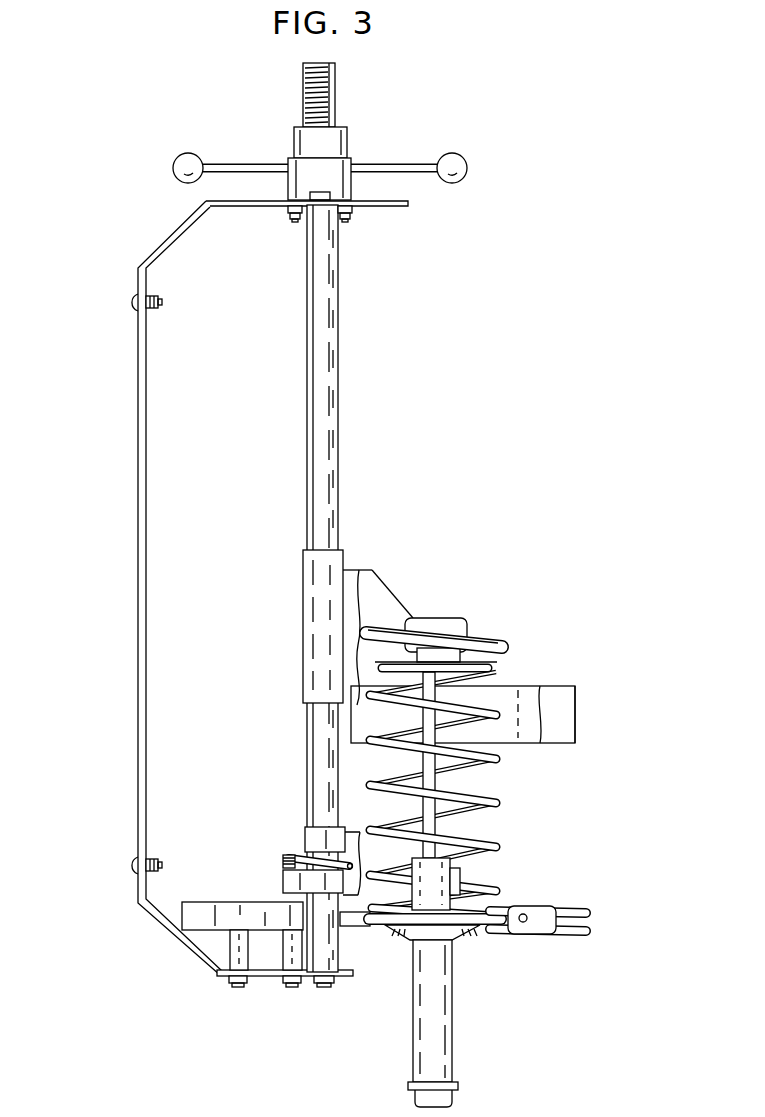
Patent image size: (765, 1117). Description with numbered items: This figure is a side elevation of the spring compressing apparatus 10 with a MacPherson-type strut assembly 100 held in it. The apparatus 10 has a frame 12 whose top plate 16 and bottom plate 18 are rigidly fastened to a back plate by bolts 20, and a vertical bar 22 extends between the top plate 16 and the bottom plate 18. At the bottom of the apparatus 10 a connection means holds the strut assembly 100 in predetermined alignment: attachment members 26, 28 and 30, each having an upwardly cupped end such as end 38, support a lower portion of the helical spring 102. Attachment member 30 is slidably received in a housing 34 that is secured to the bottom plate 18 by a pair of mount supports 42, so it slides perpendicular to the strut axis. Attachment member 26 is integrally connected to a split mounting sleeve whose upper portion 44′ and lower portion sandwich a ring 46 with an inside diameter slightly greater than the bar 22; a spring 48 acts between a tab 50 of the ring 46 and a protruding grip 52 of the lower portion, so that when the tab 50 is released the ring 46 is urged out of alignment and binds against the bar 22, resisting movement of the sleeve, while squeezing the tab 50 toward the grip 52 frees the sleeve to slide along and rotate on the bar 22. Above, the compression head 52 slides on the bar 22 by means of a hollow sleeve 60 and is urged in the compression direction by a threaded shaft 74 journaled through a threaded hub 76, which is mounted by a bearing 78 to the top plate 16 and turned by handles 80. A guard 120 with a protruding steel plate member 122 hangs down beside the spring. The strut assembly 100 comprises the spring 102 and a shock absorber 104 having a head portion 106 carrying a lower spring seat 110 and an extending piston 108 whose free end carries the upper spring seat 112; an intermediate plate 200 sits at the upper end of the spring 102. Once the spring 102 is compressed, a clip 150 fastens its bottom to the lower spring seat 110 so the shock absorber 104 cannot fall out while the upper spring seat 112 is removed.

The apparatus 10 is at (408, 457).
The frame 12 is at (128, 537).
The top plate 16 is at (257, 206).
The bottom plate 18 is at (267, 977).
The bolts 20 is at (163, 301).
The vertical bar 22 is at (306, 360).
The attachment member 26 is at (360, 572).
The attachment member 28 is at (392, 588).
The attachment member 30 is at (353, 924).
The housing 34 is at (210, 903).
The upwardly cupped end 38 is at (460, 904).
The mount supports 42 is at (226, 952).
The upper portion of sleeve 44′ is at (305, 818).
The ring 46 is at (348, 866).
The spring 48 is at (284, 864).
The tab 50 is at (298, 858).
The compression head 52 is at (292, 545).
The hollow sleeve 60 is at (303, 614).
The threaded shaft 74 is at (337, 88).
The threaded hub 76 is at (352, 186).
The bearing 78 is at (352, 216).
The handles 80 is at (376, 158).
The strut assembly 100 is at (535, 815).
The spring 102 is at (499, 849).
The shock absorber 104 is at (466, 1012).
The head portion 106 is at (455, 1065).
The piston 108 is at (463, 794).
The lower spring seat 110 is at (461, 936).
The upper spring seat 112 is at (482, 636).
The guard 120 is at (576, 678).
The protruding steel plate member 122 is at (577, 718).
The clip 150 is at (567, 915).
The intermediate plate 200 is at (499, 662).